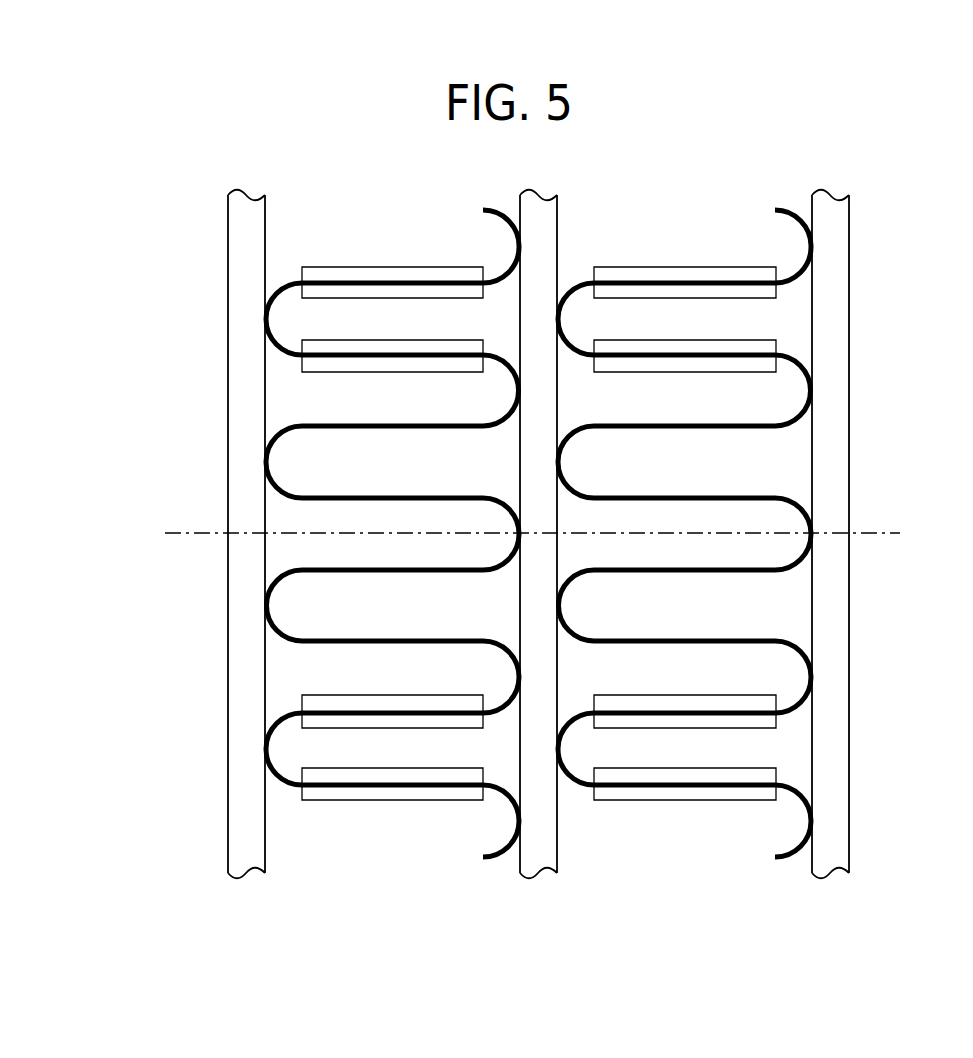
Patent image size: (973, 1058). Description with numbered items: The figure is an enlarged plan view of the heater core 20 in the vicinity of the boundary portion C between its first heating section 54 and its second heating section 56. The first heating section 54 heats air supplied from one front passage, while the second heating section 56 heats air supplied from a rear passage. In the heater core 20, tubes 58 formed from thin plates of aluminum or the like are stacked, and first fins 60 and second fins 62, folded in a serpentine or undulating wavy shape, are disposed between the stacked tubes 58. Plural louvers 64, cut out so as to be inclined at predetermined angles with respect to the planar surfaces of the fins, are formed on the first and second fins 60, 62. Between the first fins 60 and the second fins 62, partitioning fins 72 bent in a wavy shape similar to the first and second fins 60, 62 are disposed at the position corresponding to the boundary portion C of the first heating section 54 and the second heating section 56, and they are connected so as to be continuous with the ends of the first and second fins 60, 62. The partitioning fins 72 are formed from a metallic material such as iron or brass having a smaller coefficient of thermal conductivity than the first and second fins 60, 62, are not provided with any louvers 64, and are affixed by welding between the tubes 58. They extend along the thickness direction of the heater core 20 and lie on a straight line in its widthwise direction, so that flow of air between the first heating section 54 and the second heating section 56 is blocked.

The heater core 20 is at (550, 520).
The first heating section 54 is at (325, 668).
The second heating section 56 is at (318, 478).
The tube 58 is at (552, 228).
The first fin 60 is at (285, 788).
The second fin 62 is at (285, 300).
The louver 64 is at (382, 272).
The partitioning fin 72 is at (313, 572).
The boundary portion C is at (900, 525).